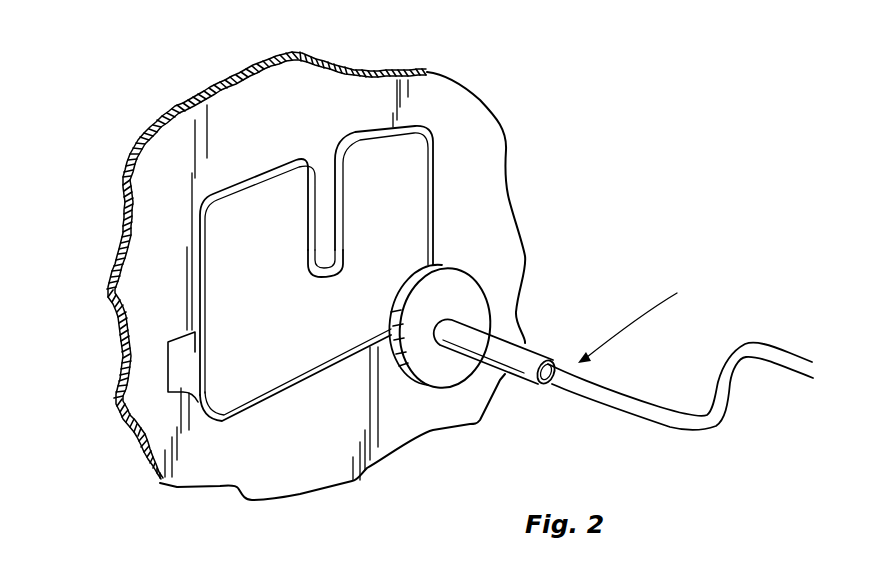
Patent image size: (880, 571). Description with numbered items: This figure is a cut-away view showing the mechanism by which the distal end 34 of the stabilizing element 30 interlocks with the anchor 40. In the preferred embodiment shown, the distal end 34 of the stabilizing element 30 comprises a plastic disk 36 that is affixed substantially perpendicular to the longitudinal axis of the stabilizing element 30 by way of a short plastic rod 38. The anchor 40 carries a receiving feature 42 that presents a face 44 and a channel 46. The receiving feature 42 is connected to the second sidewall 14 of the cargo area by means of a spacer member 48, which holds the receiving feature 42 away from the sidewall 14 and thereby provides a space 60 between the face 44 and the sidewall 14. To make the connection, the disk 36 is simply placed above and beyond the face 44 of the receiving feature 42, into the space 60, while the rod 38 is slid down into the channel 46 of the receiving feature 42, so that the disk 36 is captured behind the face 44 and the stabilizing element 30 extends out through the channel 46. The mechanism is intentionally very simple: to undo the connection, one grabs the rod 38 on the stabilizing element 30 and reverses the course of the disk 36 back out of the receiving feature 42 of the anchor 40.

The second sidewall 14 is at (257, 450).
The stabilizing element 30 is at (677, 428).
The distal end 34 is at (638, 320).
The plastic disk 36 is at (477, 290).
The short plastic rod 38 is at (497, 345).
The anchor 40 is at (371, 245).
The receiving feature 42 is at (422, 165).
The face 44 is at (253, 283).
The channel 46 is at (323, 253).
The spacer member 48 is at (181, 393).
The space 60 is at (182, 263).